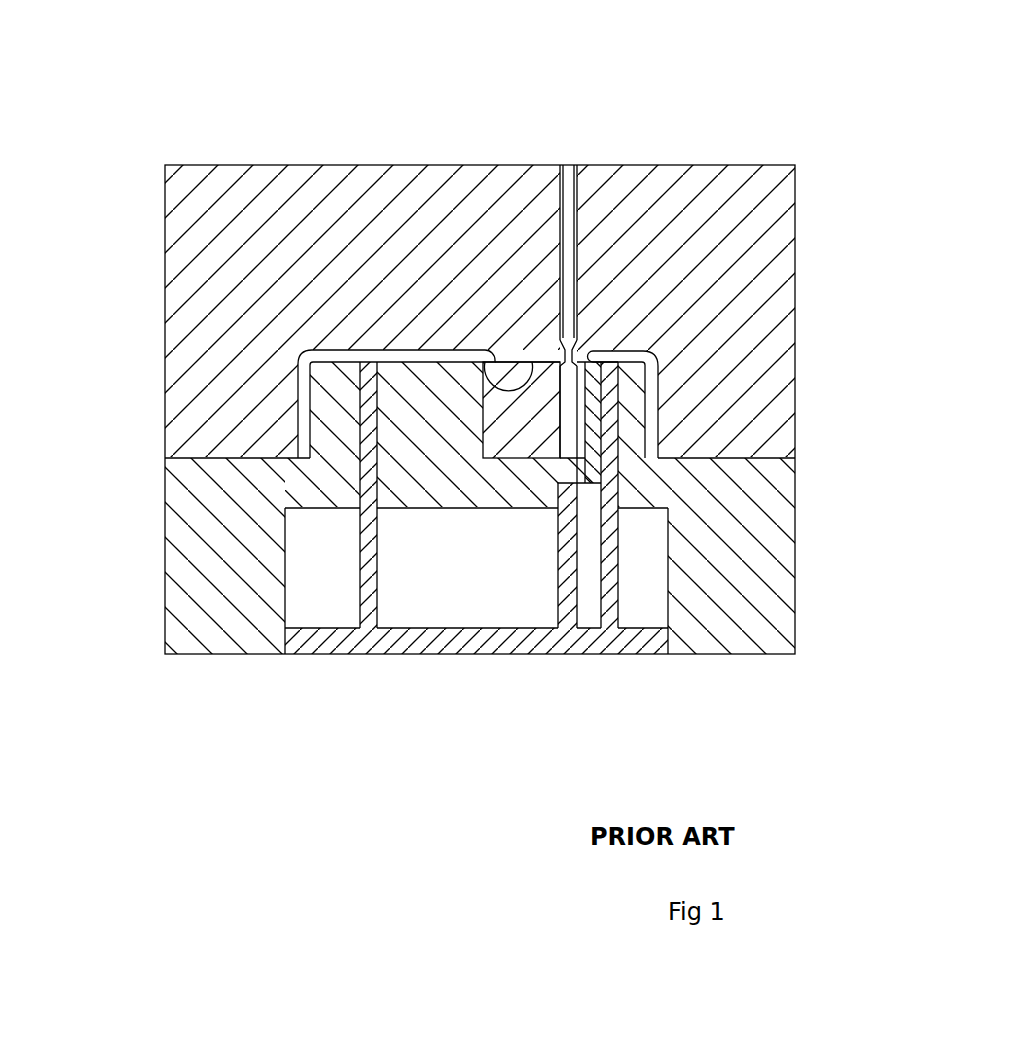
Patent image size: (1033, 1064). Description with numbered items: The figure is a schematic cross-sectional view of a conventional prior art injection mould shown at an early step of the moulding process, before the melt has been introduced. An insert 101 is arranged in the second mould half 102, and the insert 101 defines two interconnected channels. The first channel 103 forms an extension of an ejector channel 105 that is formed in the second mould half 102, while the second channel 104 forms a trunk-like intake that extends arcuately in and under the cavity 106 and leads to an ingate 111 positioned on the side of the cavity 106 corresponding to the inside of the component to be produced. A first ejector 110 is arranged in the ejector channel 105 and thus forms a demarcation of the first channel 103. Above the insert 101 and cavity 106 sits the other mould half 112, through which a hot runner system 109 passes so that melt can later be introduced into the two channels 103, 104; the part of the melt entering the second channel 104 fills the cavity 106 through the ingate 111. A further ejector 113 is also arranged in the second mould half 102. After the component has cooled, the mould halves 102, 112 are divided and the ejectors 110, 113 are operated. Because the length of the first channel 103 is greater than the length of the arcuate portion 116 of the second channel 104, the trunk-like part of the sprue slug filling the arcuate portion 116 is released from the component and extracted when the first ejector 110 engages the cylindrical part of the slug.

The insert 101 is at (538, 397).
The second mould half 102 is at (213, 608).
The first channel 103 is at (568, 432).
The second channel 104 is at (538, 357).
The ejector channel 105 is at (566, 486).
The cavity 106 is at (417, 363).
The hot runner system 109 is at (568, 282).
The first ejector 110 is at (565, 500).
The ingate 111 is at (492, 372).
The mould half 112 is at (210, 245).
The ejector 113 is at (368, 563).
The arcuate portion 116 is at (512, 388).